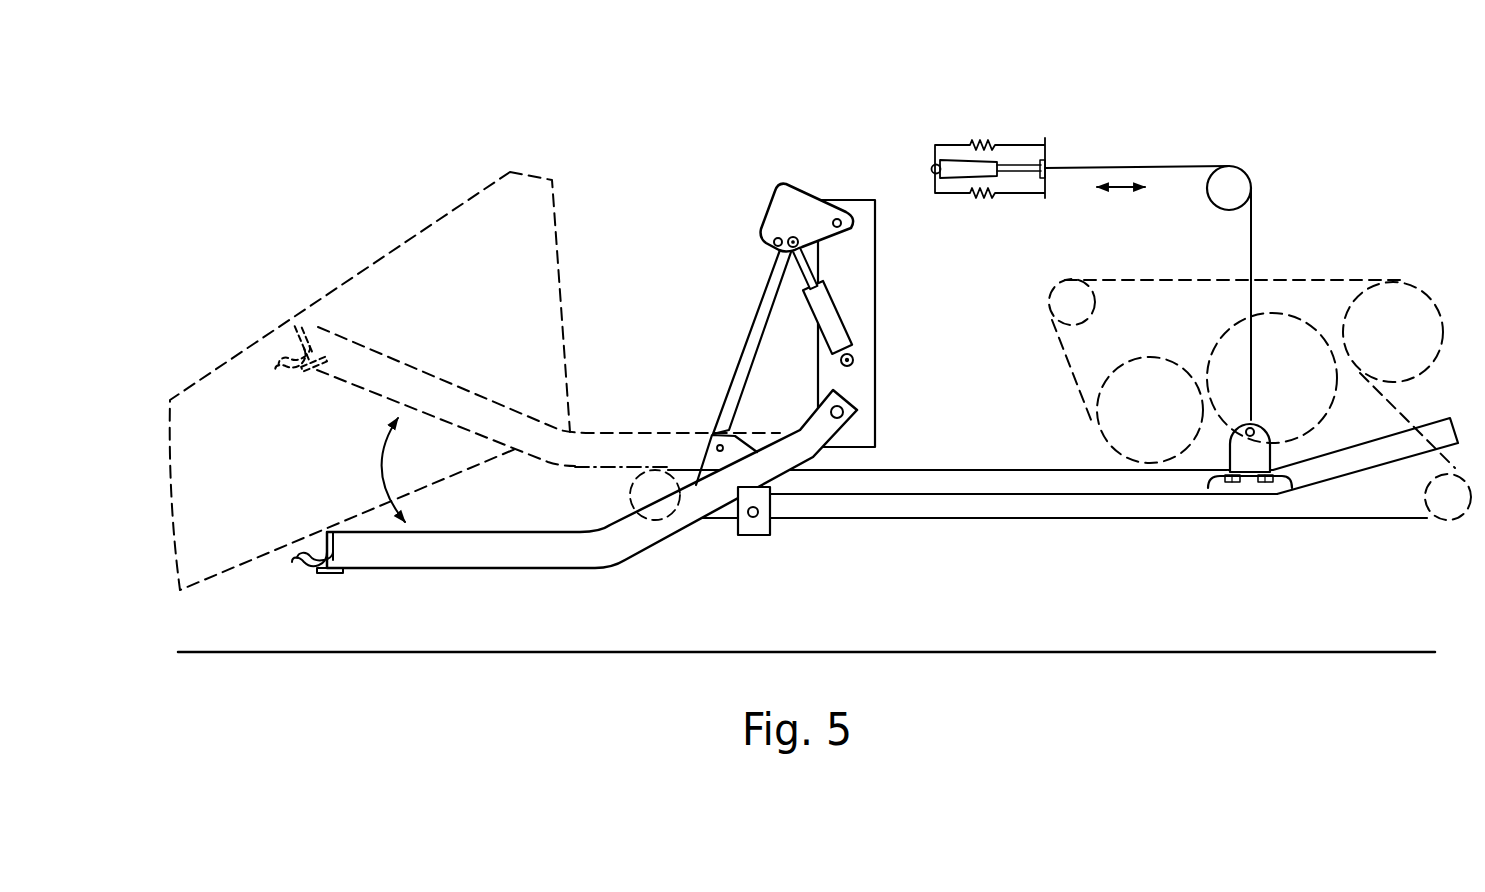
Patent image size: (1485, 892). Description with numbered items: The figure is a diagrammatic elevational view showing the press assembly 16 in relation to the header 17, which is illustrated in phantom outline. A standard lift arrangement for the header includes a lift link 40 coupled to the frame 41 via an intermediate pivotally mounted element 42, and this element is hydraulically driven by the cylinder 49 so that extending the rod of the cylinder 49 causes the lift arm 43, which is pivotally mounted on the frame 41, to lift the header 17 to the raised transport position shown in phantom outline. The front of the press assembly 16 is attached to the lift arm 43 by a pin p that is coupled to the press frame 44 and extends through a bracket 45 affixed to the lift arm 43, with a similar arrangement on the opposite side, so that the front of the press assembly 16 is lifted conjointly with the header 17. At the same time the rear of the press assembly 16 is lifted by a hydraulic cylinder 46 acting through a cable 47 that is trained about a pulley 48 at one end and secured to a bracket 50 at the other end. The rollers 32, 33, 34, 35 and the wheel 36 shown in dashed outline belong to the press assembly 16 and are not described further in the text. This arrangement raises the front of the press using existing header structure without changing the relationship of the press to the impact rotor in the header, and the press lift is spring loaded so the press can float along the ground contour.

The press assembly 16 is at (1322, 232).
The header 17 is at (427, 225).
The roller 32 is at (1155, 357).
The roller 33 is at (1290, 316).
The roller 34 is at (1417, 283).
The roller 35 is at (1080, 322).
The wheel 36 is at (1427, 485).
The lift link 40 is at (753, 317).
The frame 41 is at (854, 277).
The intermediate pivotally mounted element 42 is at (800, 207).
The lift arm 43 is at (523, 550).
The press frame 44 is at (977, 480).
The bracket 45 is at (735, 532).
The hydraulic cylinder 46 is at (970, 165).
The cable 47 is at (1157, 167).
The pulley 48 is at (1210, 195).
The cylinder 49 is at (837, 337).
The bracket 50 is at (1223, 455).
The pin p is at (753, 518).